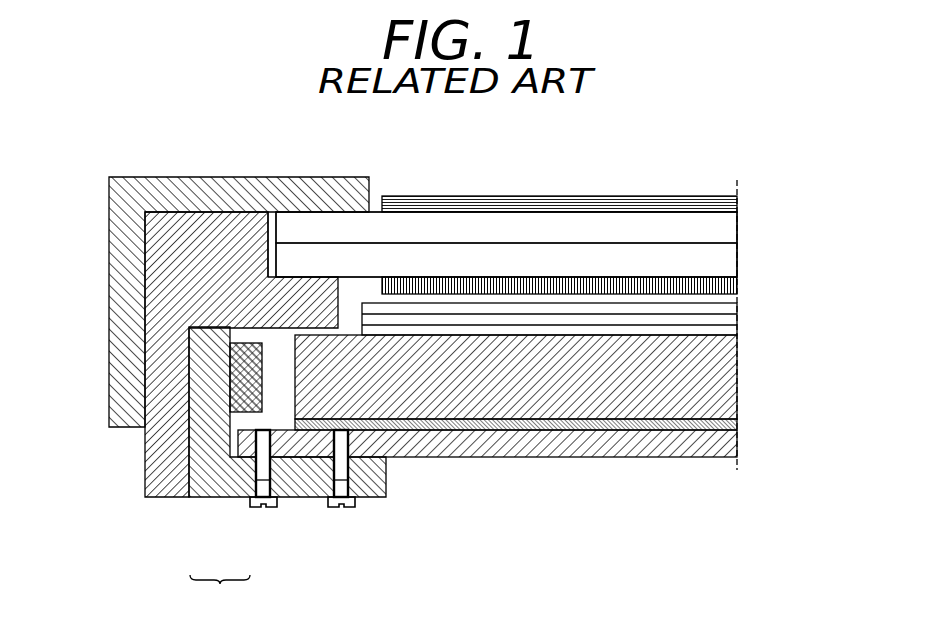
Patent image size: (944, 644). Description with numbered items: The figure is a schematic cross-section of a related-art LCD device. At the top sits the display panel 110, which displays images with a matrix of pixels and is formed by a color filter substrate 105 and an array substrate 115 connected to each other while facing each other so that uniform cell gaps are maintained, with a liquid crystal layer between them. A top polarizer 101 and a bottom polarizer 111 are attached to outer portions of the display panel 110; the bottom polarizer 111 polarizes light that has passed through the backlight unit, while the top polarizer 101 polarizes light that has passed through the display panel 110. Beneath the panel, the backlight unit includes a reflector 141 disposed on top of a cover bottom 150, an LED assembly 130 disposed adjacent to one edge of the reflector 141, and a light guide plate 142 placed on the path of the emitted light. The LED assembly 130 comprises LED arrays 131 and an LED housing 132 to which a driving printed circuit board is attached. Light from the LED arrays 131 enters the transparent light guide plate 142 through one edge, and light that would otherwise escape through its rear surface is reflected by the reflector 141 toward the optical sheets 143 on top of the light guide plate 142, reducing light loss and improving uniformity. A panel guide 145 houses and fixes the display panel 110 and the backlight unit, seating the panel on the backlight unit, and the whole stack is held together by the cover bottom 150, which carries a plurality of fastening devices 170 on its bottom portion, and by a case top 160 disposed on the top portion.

The top polarizer 101 is at (737, 206).
The color filter substrate 105 is at (733, 232).
The array substrate 115 is at (733, 257).
The display panel 110 is at (811, 222).
The bottom polarizer 111 is at (737, 287).
The optical sheets 143 is at (733, 322).
The light guide plate 142 is at (733, 382).
The reflector 141 is at (733, 428).
The cover bottom 150 is at (737, 450).
The case top 160 is at (109, 258).
The panel guide 145 is at (145, 461).
The LED housing 132 is at (205, 497).
The LED arrays 131 is at (246, 412).
The LED assembly 130 is at (220, 593).
The fastening devices 170 is at (270, 507).